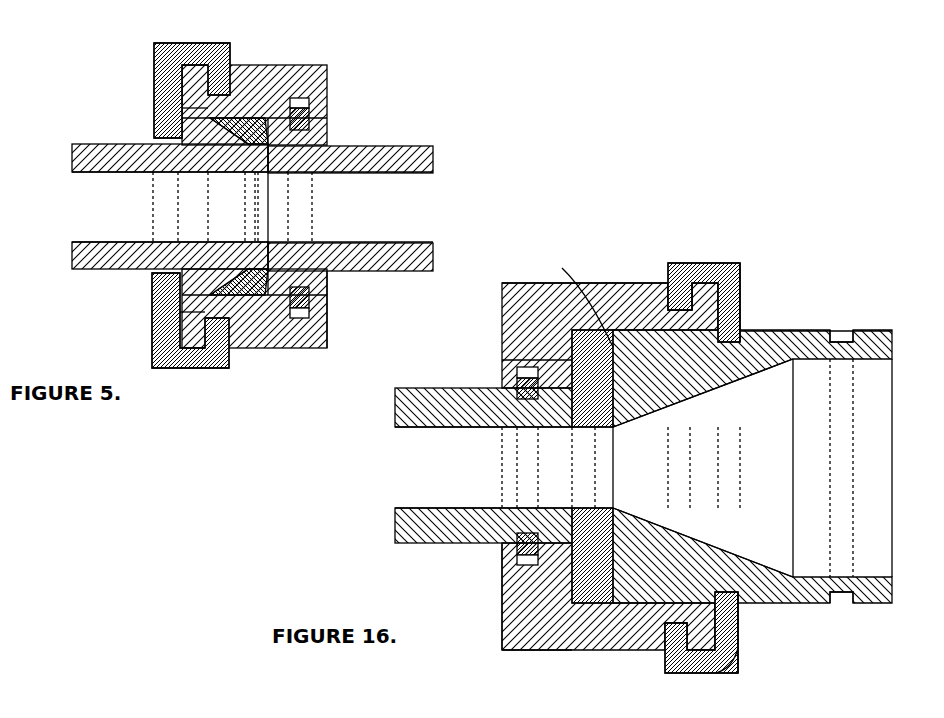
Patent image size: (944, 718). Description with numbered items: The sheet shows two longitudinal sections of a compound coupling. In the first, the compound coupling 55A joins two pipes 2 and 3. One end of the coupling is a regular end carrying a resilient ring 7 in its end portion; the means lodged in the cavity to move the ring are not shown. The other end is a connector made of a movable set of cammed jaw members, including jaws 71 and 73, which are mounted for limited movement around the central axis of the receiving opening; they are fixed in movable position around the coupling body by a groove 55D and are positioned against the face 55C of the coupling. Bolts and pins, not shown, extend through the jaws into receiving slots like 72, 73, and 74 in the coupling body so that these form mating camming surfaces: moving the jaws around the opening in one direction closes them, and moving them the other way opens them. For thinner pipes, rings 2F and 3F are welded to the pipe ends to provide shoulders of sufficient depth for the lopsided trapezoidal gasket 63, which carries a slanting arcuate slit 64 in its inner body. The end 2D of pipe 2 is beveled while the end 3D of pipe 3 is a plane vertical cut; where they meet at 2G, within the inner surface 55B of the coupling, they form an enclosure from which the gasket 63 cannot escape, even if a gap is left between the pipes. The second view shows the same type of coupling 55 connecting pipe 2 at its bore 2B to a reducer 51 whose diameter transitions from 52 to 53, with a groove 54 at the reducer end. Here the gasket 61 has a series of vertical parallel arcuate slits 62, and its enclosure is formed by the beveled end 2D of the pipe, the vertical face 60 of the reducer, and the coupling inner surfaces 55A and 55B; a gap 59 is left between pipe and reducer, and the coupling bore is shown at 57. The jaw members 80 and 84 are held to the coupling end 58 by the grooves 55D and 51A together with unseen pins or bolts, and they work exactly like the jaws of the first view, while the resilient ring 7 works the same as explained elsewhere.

In FIG. 5, the pipe 2 is at (88, 162).
In FIG. 16, the pipe 2 is at (417, 403).
In FIG. 16, the pipe bore 2B is at (448, 427).
In FIG. 5, the beveled end of pipe 2D is at (240, 130).
In FIG. 16, the beveled end of pipe 2D is at (565, 428).
In FIG. 5, the ring 2F is at (188, 170).
In FIG. 5, the meeting point of pipe ends 2G is at (283, 190).
In FIG. 5, the pipe 3 is at (410, 156).
In FIG. 5, the plane end of pipe 3D is at (290, 171).
In FIG. 5, the ring 3F is at (328, 283).
In FIG. 5, the resilient ring 7 is at (310, 118).
In FIG. 16, the resilient ring 7 is at (503, 592).
In FIG. 16, the reducer 51 is at (762, 603).
In FIG. 16, the groove 51A is at (748, 345).
In FIG. 16, the reducer diameter 52 is at (615, 510).
In FIG. 16, the reducer diameter 53 is at (800, 580).
In FIG. 16, the groove 54 is at (843, 340).
In FIG. 16, the coupling 55 is at (570, 365).
In FIG. 5, the compound coupling 55A is at (237, 98).
In FIG. 16, the compound coupling 55A is at (742, 313).
In FIG. 5, the inner surface of coupling 55B is at (287, 100).
In FIG. 16, the inner surface of coupling 55B is at (737, 667).
In FIG. 5, the face of coupling 55C is at (154, 92).
In FIG. 5, the groove 55D is at (220, 368).
In FIG. 16, the groove 55D is at (665, 650).
In FIG. 16, the sleeve bore 57 is at (637, 303).
In FIG. 16, the coupling end 58 is at (738, 288).
In FIG. 16, the gap 59 is at (597, 422).
In FIG. 16, the vertical face of reducer 60 is at (695, 398).
In FIG. 16, the gasket 61 is at (572, 370).
In FIG. 16, the arcuate slits 62 is at (598, 418).
In FIG. 5, the lopsided trapezoidal gasket 63 is at (250, 277).
In FIG. 5, the slanting arcuate slit 64 is at (262, 275).
In FIG. 5, the jaw 71 is at (154, 70).
In FIG. 5, the receiving slot 72 is at (180, 110).
In FIG. 5, the jaw 73 is at (153, 350).
In FIG. 5, the nut thread 74 is at (178, 312).
In FIG. 16, the jaw member 80 is at (712, 277).
In FIG. 16, the jaw member 84 is at (712, 672).